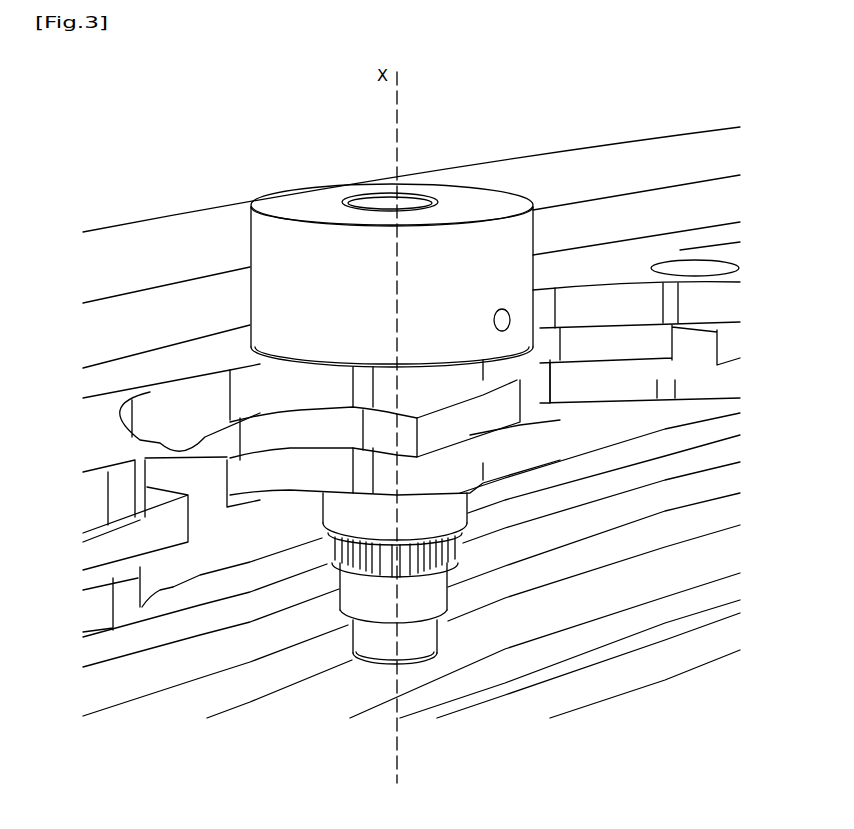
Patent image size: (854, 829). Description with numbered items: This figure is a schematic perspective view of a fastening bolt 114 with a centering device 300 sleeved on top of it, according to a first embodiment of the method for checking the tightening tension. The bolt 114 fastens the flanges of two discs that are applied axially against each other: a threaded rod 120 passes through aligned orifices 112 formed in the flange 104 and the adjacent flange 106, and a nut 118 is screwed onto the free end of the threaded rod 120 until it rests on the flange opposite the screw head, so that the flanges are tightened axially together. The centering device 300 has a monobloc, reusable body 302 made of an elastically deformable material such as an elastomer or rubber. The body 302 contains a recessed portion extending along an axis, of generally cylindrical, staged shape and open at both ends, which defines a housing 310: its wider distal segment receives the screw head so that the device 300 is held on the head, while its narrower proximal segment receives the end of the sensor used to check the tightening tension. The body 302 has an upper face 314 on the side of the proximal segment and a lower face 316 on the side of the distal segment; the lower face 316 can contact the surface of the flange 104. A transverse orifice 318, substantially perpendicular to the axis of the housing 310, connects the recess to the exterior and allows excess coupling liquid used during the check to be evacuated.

The flange 104 is at (742, 302).
The lower plate 106 is at (742, 378).
The orifices 112 is at (697, 262).
The bolt 114 is at (148, 324).
The nut 118 is at (470, 503).
The threaded rod 120 is at (413, 640).
The centering device 300 is at (429, 414).
The body 302 is at (493, 248).
The housing 310 is at (383, 197).
The upper face 314 is at (290, 198).
The lower face 316 is at (303, 363).
The orifice 318 is at (510, 322).